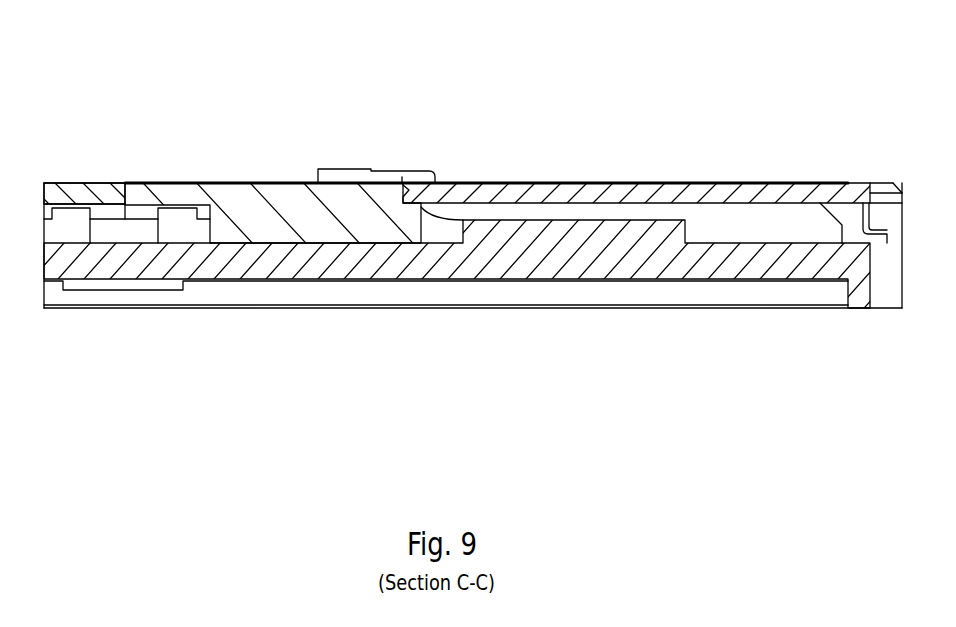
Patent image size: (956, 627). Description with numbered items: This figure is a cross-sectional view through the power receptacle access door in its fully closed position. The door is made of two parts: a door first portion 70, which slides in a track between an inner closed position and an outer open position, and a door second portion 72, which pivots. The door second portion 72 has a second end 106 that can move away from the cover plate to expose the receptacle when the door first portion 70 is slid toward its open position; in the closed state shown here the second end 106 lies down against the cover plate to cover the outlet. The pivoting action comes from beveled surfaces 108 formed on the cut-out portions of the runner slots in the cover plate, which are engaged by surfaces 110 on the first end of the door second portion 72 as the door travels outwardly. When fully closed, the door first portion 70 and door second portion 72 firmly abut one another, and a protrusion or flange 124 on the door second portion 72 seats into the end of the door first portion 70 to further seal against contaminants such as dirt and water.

The door first portion 70 is at (622, 183).
The door second portion 72 is at (237, 190).
The second end 106 is at (135, 190).
The beveled surfaces 108 is at (512, 218).
The surfaces 110 is at (423, 227).
The flange 124 is at (435, 183).